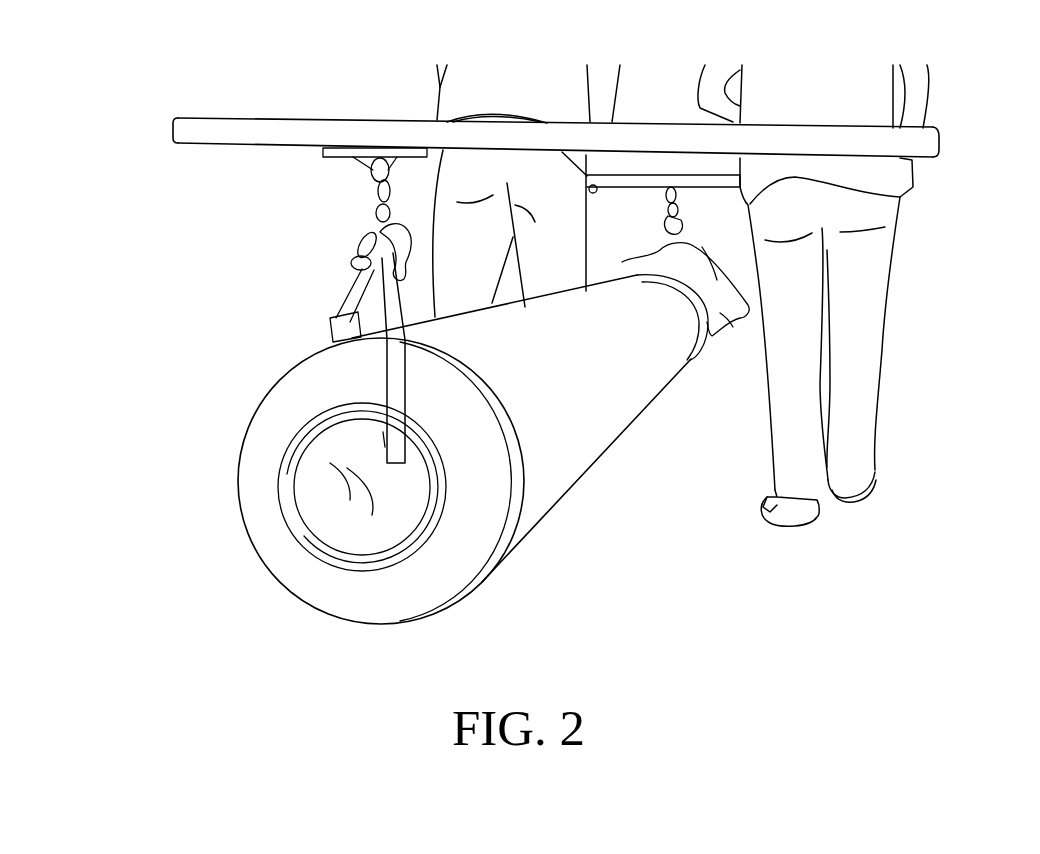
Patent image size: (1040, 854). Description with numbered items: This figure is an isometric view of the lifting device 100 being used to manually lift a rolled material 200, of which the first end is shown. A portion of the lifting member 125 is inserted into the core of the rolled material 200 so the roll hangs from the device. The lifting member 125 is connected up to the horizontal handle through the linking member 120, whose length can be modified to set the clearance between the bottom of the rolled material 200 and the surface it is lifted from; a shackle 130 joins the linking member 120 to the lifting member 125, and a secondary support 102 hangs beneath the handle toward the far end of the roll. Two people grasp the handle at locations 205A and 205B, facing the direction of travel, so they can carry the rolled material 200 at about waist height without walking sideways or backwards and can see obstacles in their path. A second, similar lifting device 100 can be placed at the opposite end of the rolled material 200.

The lifting device 100 is at (245, 128).
The secondary support bar 102 is at (719, 187).
The linking member 120 is at (370, 188).
The lifting member 125 is at (365, 476).
The shackle 130 is at (338, 254).
The rolled material 200 is at (592, 444).
The grasping location 205A is at (924, 159).
The grasping location 205B is at (192, 150).